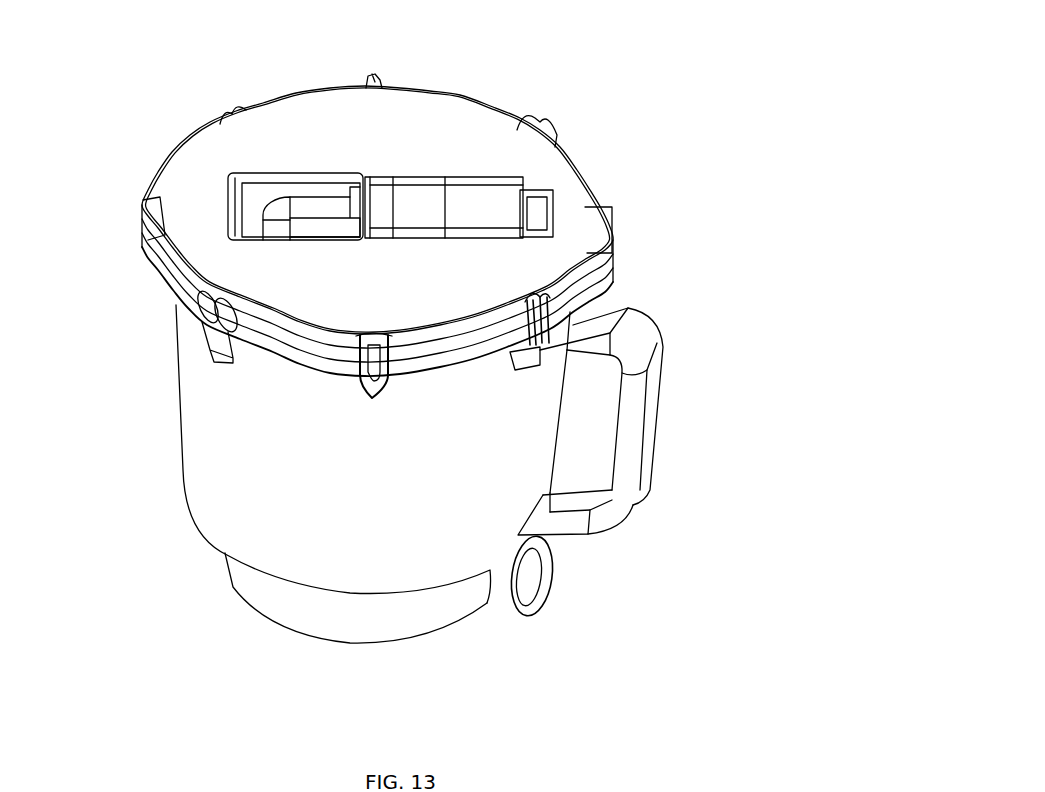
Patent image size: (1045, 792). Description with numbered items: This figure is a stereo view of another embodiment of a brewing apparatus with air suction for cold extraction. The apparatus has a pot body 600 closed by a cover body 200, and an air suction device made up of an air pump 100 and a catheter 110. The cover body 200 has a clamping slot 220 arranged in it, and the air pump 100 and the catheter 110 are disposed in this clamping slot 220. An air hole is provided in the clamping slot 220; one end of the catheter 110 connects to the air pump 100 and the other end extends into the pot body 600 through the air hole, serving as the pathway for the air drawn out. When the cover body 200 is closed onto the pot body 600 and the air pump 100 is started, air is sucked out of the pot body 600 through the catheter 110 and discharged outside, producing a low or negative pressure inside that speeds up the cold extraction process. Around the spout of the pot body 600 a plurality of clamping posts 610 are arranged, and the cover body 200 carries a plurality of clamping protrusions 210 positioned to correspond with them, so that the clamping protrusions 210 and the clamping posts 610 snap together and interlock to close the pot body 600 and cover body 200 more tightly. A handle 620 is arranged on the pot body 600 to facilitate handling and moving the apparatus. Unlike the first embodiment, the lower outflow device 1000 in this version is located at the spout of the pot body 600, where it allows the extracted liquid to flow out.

The air pump 100 is at (437, 200).
The catheter 110 is at (305, 203).
The cover body 200 is at (540, 177).
The clamping protrusions 210 is at (610, 213).
The clamping slot 220 is at (262, 203).
The pot body 600 is at (230, 470).
The clamping posts 610 is at (175, 307).
The handle 620 is at (657, 430).
The lower outflow device 1000 is at (547, 590).